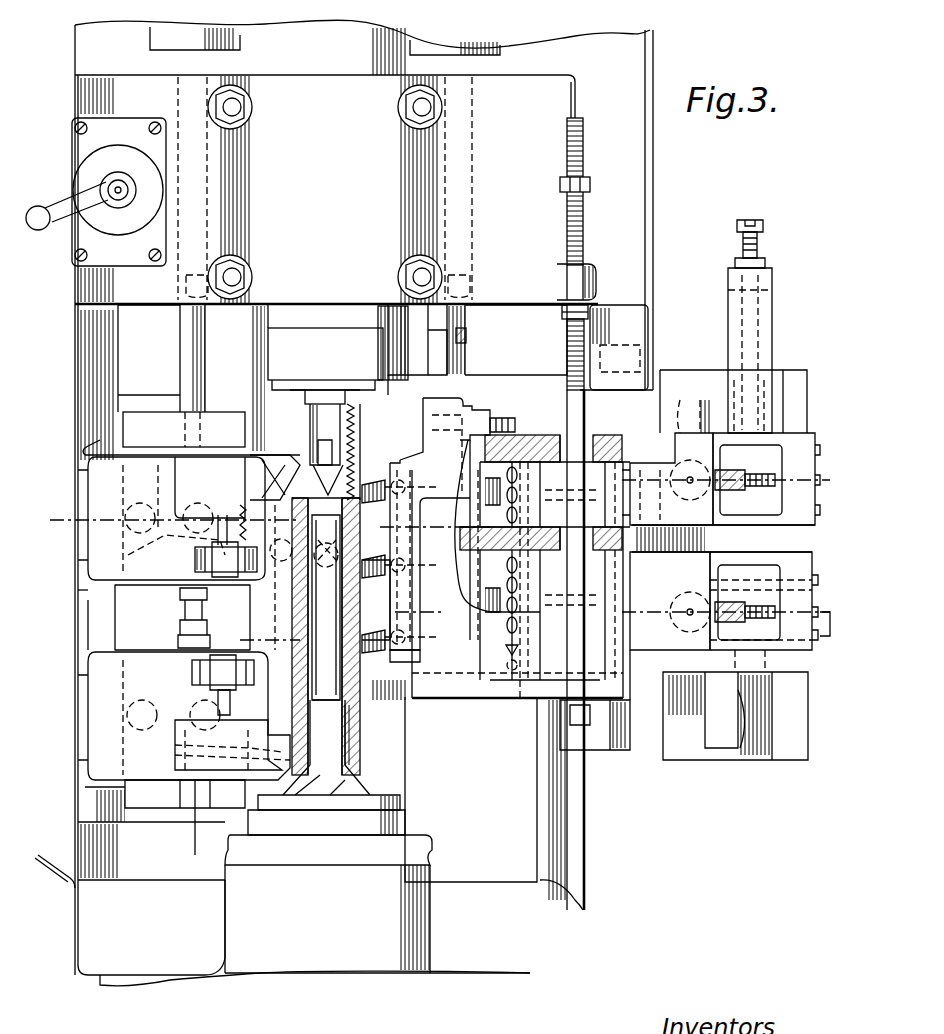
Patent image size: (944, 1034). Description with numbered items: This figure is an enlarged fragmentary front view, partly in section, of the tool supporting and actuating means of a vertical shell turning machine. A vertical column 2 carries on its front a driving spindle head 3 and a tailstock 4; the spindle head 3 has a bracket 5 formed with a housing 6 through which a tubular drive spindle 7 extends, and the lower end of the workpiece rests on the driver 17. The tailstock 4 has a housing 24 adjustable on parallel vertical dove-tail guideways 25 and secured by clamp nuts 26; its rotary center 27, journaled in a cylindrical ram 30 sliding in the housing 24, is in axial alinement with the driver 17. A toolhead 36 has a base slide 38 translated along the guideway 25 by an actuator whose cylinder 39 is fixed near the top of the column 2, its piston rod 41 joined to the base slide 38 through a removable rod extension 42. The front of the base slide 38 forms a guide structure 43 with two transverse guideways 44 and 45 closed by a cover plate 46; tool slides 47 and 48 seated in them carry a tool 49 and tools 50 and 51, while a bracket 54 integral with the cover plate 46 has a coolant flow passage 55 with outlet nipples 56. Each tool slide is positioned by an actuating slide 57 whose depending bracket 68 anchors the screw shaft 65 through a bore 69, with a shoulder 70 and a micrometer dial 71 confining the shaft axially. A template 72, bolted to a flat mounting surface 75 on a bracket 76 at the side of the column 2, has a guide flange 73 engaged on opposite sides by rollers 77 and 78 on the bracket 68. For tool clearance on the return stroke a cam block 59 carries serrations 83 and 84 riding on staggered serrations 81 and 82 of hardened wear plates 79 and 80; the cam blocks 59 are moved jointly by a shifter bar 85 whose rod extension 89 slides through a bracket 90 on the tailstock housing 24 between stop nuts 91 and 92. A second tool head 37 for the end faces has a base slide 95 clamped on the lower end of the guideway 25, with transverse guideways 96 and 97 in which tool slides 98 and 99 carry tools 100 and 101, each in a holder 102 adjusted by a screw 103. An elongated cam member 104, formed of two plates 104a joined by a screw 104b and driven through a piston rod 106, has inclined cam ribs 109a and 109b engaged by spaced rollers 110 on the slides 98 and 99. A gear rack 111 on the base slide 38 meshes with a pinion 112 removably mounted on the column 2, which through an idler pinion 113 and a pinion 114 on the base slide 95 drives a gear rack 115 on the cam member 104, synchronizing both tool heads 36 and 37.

The vertical column 2 is at (66, 382).
The driving spindle head 3 is at (452, 966).
The tailstock 4 is at (281, 371).
The bracket 5 is at (602, 362).
The housing 6 is at (59, 526).
The tubular drive spindle 7 is at (192, 368).
The driver 17 is at (345, 778).
The tailstock housing 24 is at (560, 100).
The vertical dove-tail guideways 25 is at (118, 318).
The clamp nuts 26 is at (246, 112).
The center 27 is at (305, 420).
The cylindrical ram 30 is at (316, 330).
The toolhead 36 is at (649, 690).
The tool head 37 is at (80, 590).
The base slide 38 is at (505, 380).
The cylinder 39 is at (440, 40).
The piston rod 41 is at (462, 312).
The removable rod extension 42 is at (452, 352).
The guide structure 43 is at (478, 690).
The guideway 44 is at (610, 435).
The guideway 45 is at (528, 700).
The cover plate 46 is at (508, 700).
The tool slide 47 is at (500, 424).
The tool slide 48 is at (470, 580).
The tool 49 is at (375, 478).
The tool 50 is at (372, 558).
The tool 51 is at (385, 650).
The bracket 54 is at (440, 440).
The flow passage 55 is at (435, 539).
The outlet nipples 56 is at (412, 486).
The actuating slide 57 is at (684, 420).
The cam block 59 is at (550, 460).
The shaft 65 is at (688, 433).
The bracket 68 is at (715, 445).
The bore 69 is at (680, 648).
The shoulder 70 is at (670, 482).
The micrometer dial 71 is at (735, 470).
The cam or template 72 is at (776, 312).
The guide flange 73 is at (730, 385).
The flat mounting surface 75 is at (684, 752).
The bracket 76 is at (668, 375).
The roller 77 is at (723, 538).
The second roller 78 is at (745, 656).
The hardened wear plate 79 is at (512, 462).
The hardened wear plate 80 is at (618, 450).
The cam ribs or serrations 81 is at (475, 518).
The serrations 82 is at (650, 510).
The serrations 83 is at (505, 516).
The serrations 84 is at (666, 576).
The shifter bar 85 is at (586, 418).
The rod extension 89 is at (586, 228).
The bracket 90 is at (598, 280).
The stop nut 91 is at (590, 312).
The stop nut 92 is at (590, 186).
The base slide 95 is at (86, 482).
The transverse guideway 96 is at (86, 502).
The transverse guideway 97 is at (86, 694).
The tool slide 98 is at (96, 562).
The tool slide 99 is at (96, 712).
The tool 100 is at (300, 458).
The tool 101 is at (318, 772).
The holder 102 is at (262, 718).
The screw 103 is at (220, 548).
The actuating cam member 104 is at (149, 399).
The rectangular cam plates 104a is at (125, 787).
The screw 104b is at (180, 600).
The piston rod 106 is at (180, 330).
The cam rib 109a is at (171, 552).
The cam rib 109b is at (204, 754).
The rollers 110 is at (136, 505).
The gear rack 111 is at (358, 428).
The pinion 112 is at (304, 622).
The idler pinion 113 is at (300, 618).
The pinion 114 is at (201, 493).
The gear rack 115 is at (250, 518).